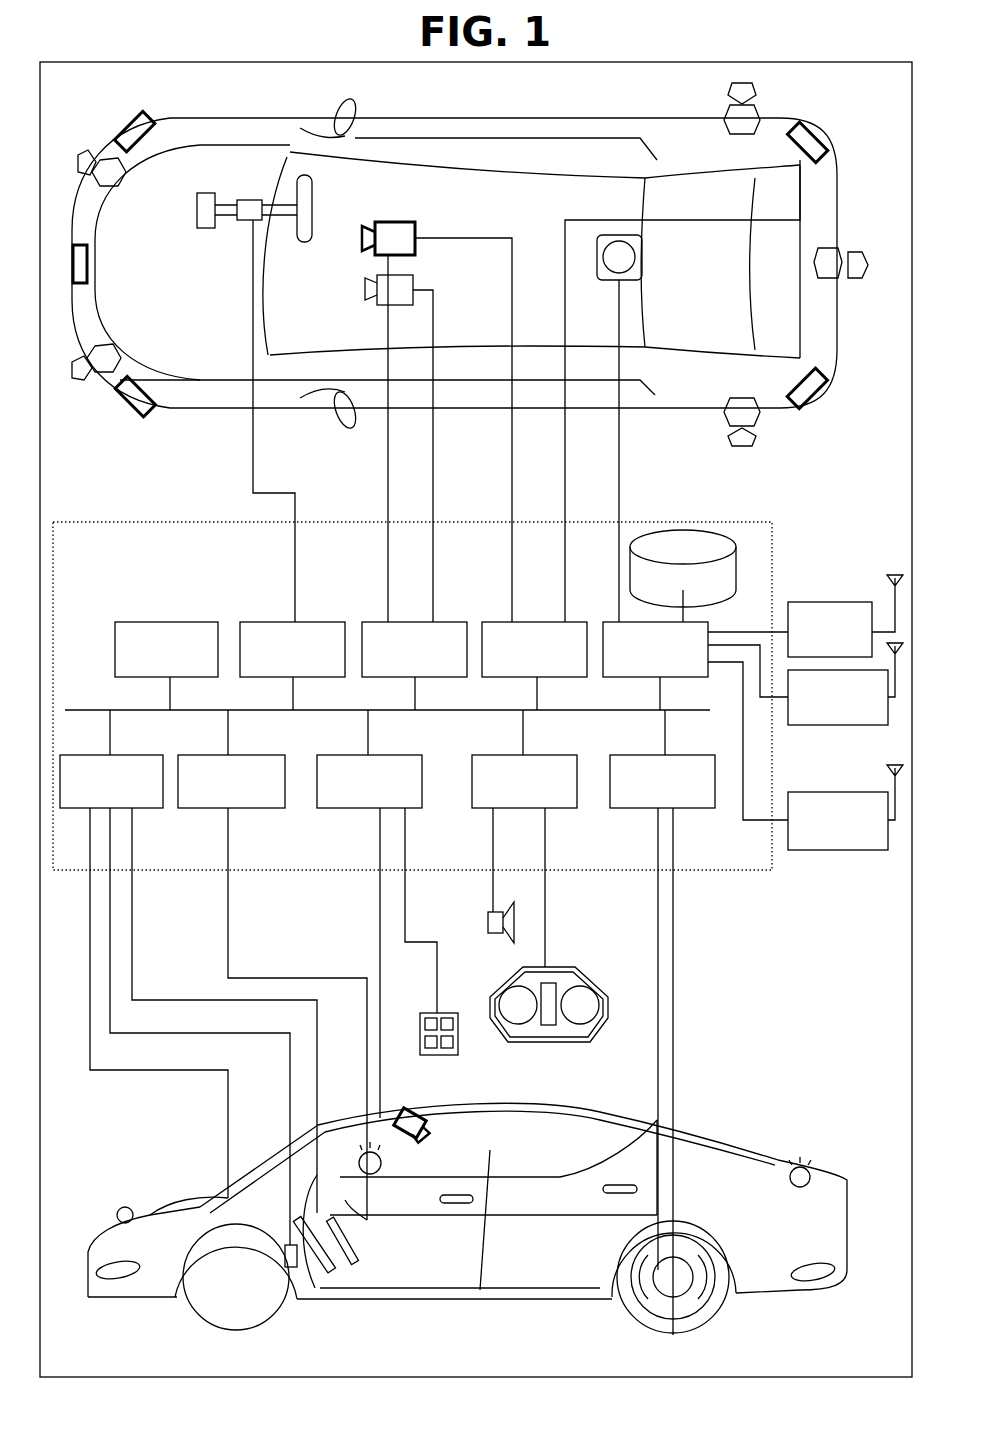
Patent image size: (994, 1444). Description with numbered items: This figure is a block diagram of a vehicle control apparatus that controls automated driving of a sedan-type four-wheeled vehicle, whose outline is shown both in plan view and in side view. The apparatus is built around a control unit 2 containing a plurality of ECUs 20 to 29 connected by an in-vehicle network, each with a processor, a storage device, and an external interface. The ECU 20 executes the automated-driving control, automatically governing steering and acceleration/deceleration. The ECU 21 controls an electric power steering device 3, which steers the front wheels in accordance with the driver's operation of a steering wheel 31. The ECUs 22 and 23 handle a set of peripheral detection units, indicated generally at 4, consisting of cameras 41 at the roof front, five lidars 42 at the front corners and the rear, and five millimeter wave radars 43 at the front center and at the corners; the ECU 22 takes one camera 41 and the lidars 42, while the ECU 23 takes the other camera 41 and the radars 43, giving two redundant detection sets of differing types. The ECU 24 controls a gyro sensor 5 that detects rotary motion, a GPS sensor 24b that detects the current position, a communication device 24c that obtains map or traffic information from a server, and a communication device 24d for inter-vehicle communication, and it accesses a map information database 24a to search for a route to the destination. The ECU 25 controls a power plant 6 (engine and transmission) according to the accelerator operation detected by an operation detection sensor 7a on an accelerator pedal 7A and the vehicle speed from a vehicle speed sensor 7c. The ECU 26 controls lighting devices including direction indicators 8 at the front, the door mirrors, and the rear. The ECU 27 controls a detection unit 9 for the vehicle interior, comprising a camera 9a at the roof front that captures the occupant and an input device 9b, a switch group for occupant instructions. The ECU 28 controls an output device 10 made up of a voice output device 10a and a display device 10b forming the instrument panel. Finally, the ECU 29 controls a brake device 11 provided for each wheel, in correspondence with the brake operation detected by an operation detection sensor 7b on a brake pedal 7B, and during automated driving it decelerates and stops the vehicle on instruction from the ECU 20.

The control unit 2 is at (748, 870).
The electric power steering device 3 is at (207, 228).
The steering wheel 31 is at (304, 242).
The sensor unit 4 is at (100, 125).
The camera 41 is at (415, 250).
The lidar 42 is at (118, 188).
The millimeter wave radar 43 is at (143, 140).
The gyro sensor 5 is at (645, 255).
The power plant 6 is at (205, 1190).
The operation detection sensor 7a is at (360, 1148).
The operation detection sensor 7b is at (365, 1212).
The vehicle speed sensor 7c is at (291, 1300).
The accelerator pedal 7A is at (350, 1268).
The brake pedal 7B is at (372, 1246).
The direction indicators 8 is at (118, 1212).
The detection unit 9 is at (500, 1088).
The camera 9a is at (430, 1128).
The input device 9b is at (440, 1055).
The output device 10 is at (572, 946).
The voice output device 10a is at (486, 915).
The display device 10b is at (492, 970).
The brake device 11 is at (456, 1290).
The ECU 20 is at (205, 615).
The ECU 21 is at (330, 615).
The ECU 22 is at (418, 615).
The ECU 23 is at (545, 615).
The ECU 24 is at (608, 615).
The map information database 24a is at (683, 530).
The GPS sensor 24b is at (845, 600).
The communication device 24c is at (840, 727).
The communication device 24d is at (840, 852).
The ECU 25 is at (150, 808).
The ECU 26 is at (205, 808).
The ECU 27 is at (325, 808).
The ECU 28 is at (570, 808).
The ECU 29 is at (700, 808).